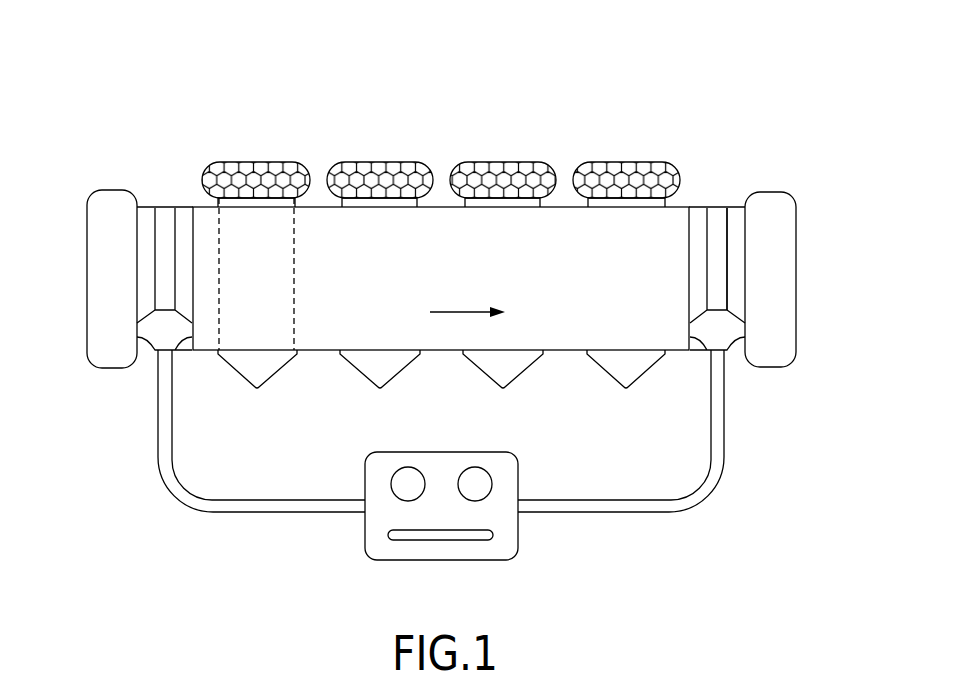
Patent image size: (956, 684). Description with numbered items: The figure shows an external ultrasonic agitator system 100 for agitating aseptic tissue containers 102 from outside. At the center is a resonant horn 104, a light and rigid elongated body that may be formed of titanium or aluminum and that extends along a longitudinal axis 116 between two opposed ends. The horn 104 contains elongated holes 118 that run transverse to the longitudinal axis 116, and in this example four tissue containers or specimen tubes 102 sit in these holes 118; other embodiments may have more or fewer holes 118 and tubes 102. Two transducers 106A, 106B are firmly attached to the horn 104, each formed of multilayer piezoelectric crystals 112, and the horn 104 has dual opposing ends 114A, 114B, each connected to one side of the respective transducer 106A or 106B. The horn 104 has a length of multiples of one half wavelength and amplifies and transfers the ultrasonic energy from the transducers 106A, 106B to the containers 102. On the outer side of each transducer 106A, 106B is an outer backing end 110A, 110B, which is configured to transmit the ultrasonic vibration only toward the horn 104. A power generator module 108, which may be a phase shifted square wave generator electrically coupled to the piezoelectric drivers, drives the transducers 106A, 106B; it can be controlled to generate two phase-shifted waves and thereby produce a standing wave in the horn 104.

The external ultrasonic agitator system 100 is at (128, 65).
The aseptic tissue containers 102 is at (281, 172).
The resonant horn 104 is at (668, 228).
The transducer 106A is at (144, 202).
The transducer 106B is at (744, 194).
The power generator module 108 is at (518, 533).
The outer backing end 110A is at (97, 322).
The outer backing end 110B is at (781, 350).
The multilayer piezoelectric crystals 112 is at (718, 220).
The end of horn 114A is at (193, 312).
The end of horn 114B is at (689, 303).
The longitudinal axis 116 is at (467, 324).
The elongated holes 118 is at (278, 275).